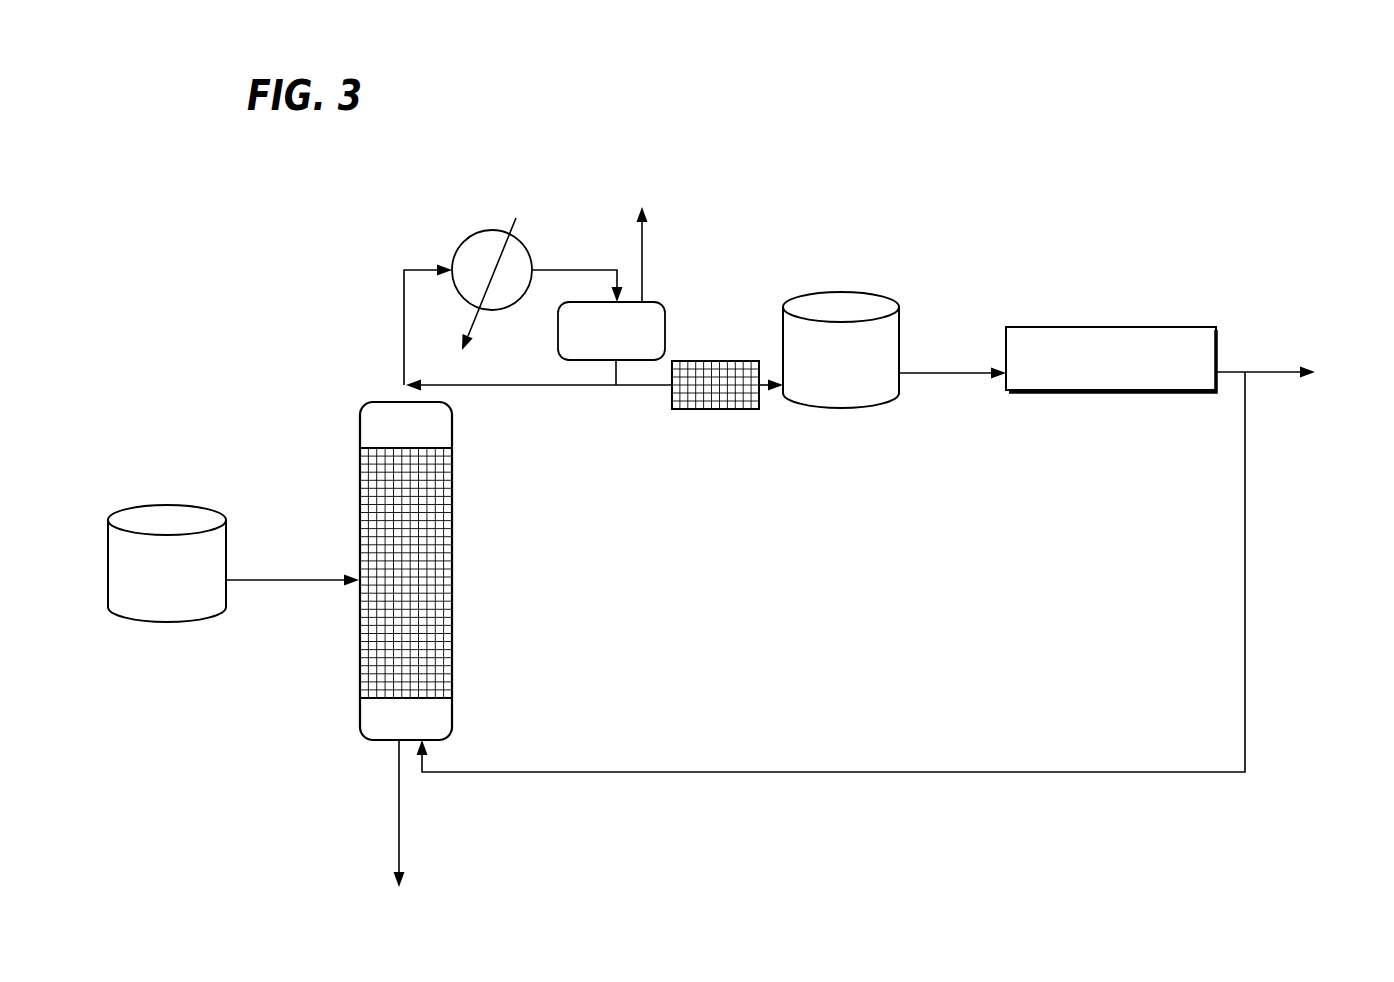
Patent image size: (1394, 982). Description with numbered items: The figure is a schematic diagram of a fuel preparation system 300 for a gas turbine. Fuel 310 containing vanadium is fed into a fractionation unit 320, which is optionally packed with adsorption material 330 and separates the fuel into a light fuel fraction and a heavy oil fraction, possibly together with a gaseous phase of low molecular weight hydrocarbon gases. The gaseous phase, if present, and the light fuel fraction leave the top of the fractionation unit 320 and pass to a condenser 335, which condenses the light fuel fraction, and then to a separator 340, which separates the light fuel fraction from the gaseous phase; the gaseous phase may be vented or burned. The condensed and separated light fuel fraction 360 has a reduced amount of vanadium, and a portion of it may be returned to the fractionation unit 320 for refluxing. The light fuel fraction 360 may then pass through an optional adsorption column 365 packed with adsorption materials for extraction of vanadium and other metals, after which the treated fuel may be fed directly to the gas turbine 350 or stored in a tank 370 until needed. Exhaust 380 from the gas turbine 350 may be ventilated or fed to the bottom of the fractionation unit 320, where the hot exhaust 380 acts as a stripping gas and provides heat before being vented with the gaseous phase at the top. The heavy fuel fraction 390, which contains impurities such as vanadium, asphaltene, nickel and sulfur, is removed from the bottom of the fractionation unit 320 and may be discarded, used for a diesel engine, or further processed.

The fuel preparation system 300 is at (838, 158).
The fuel 310 is at (142, 588).
The fractionation unit 320 is at (383, 436).
The adsorption material 330 is at (359, 482).
The condenser 335 is at (529, 220).
The separator 340 is at (588, 346).
The gas turbine 350 is at (1087, 371).
The light fuel fraction 360 is at (586, 408).
The adsorption column 365 is at (760, 405).
The tank 370 is at (817, 364).
The exhaust 380 is at (1266, 600).
The heavy fuel fraction 390 is at (399, 788).